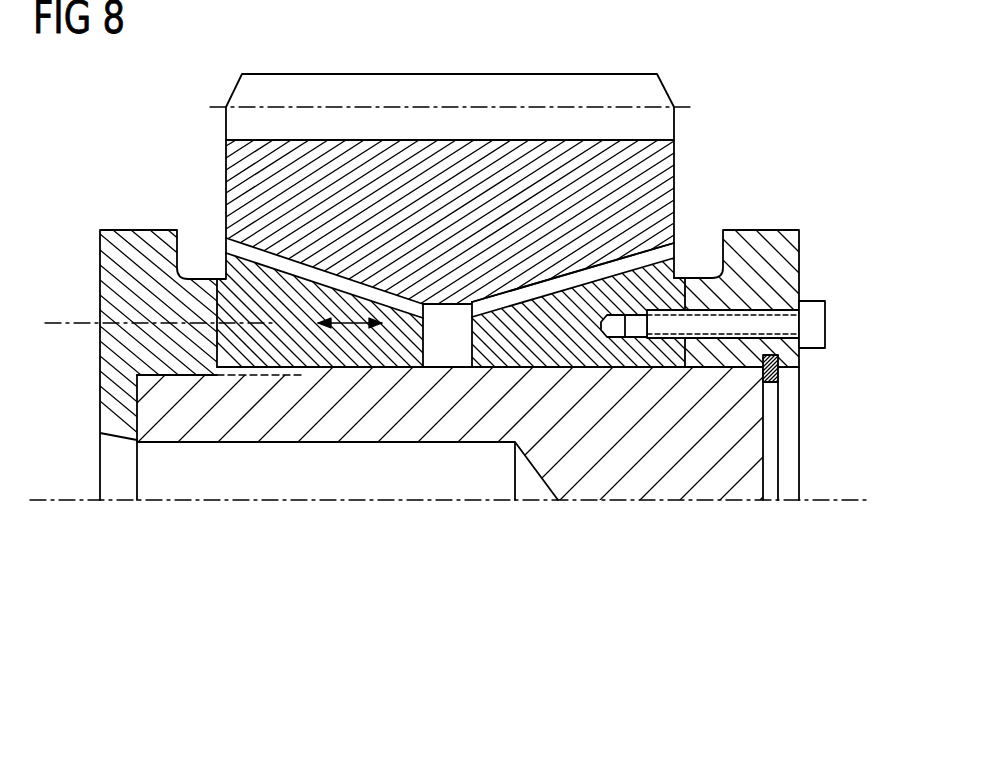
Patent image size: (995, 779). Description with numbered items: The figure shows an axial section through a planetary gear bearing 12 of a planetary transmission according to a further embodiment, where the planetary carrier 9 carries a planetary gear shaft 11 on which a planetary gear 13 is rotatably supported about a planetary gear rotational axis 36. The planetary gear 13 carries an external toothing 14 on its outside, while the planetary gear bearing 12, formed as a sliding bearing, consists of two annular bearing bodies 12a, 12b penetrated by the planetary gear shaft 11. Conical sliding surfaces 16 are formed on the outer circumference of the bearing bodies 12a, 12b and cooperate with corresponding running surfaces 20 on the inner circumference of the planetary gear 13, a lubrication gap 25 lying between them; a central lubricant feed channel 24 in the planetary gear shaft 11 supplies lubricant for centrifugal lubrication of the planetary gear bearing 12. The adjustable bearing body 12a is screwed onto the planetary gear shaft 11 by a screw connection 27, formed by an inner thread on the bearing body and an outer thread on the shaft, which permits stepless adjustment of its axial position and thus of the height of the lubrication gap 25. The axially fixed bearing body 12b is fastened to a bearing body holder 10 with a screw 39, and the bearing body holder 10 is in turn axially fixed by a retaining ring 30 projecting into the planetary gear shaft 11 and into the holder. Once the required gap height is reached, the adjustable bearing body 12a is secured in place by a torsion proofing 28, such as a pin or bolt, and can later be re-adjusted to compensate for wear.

The planetary carrier 9 is at (137, 237).
The bearing body holder 10 is at (790, 265).
The planetary gear shaft 11 is at (693, 465).
The planetary gear bearing 12 is at (504, 372).
The adjustable bearing body 12a is at (383, 350).
The axially fixed bearing body 12b is at (582, 343).
The planetary gear 13 is at (667, 170).
The external toothing 14 is at (508, 88).
The conical sliding surface 16 is at (585, 263).
The running surface 20 is at (542, 280).
The central lubricant feed channel 24 is at (110, 473).
The lubrication gap 25 is at (328, 278).
The screw connection 27 is at (265, 372).
The torsion proofing 28 is at (58, 322).
The retaining ring 30 is at (779, 372).
The planetary gear rotational axis 36 is at (847, 500).
The screw 39 is at (825, 322).